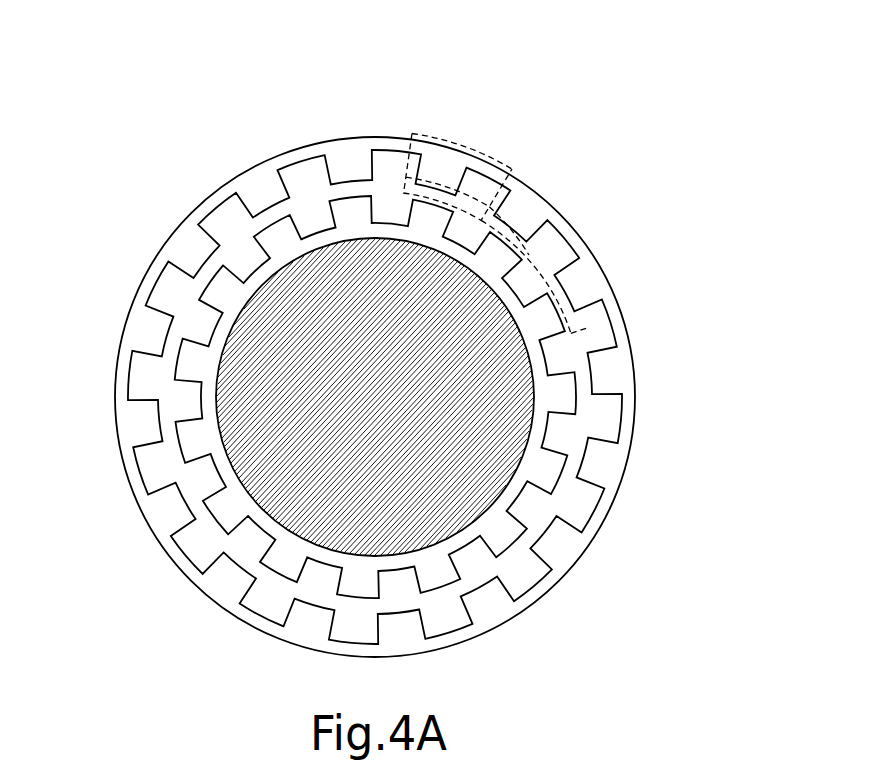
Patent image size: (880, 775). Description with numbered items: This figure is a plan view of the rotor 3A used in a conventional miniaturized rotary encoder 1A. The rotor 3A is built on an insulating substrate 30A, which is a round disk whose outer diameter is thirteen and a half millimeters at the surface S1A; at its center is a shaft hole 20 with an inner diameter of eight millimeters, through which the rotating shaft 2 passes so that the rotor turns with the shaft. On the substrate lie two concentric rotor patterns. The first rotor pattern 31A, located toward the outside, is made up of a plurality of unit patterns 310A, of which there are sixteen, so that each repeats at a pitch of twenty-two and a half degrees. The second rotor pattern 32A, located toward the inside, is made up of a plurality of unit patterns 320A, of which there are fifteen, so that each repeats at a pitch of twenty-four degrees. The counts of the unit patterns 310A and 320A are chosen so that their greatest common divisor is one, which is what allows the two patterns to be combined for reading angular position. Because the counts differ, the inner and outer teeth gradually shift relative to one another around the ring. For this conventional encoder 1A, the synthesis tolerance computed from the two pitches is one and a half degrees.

The conventional miniaturized rotary encoder 1A is at (398, 328).
The rotor 3A is at (378, 348).
The unit patterns of the first rotor pattern 310A is at (443, 137).
The first rotor pattern 31A is at (510, 175).
The second rotor pattern 32A is at (510, 228).
The unit patterns of the second rotor pattern 320A is at (578, 330).
The surface S1A is at (627, 385).
The insulating substrate 30A is at (628, 468).
The shaft hole 20 is at (217, 312).
The rotating shaft 2 is at (217, 423).